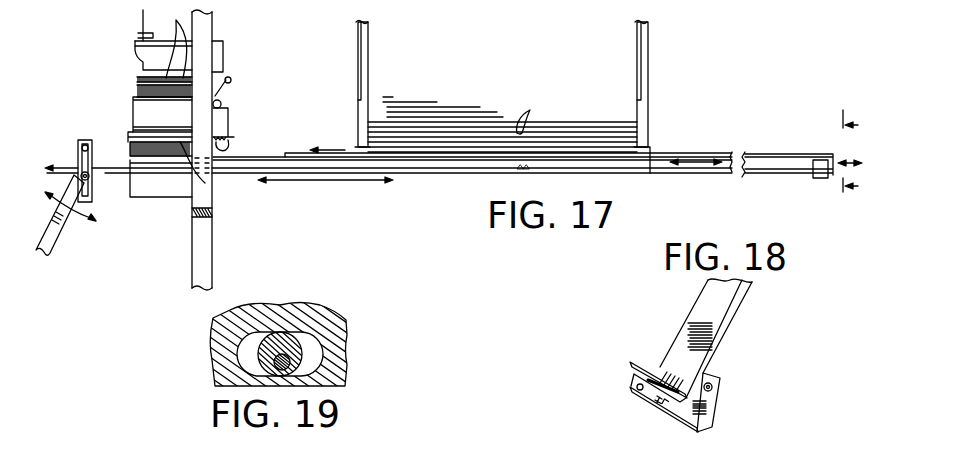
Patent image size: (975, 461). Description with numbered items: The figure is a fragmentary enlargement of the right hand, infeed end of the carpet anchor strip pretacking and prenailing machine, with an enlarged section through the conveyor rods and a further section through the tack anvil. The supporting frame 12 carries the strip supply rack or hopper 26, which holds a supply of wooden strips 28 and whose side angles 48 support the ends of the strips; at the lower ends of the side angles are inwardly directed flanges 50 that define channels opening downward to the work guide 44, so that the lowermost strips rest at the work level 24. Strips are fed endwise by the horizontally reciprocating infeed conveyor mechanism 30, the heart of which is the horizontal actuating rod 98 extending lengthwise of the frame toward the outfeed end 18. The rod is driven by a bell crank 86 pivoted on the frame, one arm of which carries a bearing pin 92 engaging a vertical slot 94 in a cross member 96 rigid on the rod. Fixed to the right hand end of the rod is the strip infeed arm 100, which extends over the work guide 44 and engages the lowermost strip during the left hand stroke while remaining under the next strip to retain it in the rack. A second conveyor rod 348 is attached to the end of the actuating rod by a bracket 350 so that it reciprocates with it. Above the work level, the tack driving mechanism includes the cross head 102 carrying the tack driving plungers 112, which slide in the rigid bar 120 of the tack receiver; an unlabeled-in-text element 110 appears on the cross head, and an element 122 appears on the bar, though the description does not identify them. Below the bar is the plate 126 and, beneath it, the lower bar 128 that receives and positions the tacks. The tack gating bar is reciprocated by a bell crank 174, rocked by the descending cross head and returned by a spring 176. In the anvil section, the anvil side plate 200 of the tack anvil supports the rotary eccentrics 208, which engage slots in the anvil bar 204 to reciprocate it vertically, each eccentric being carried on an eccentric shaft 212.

In FIG. 17, the supporting frame 12 is at (218, 258).
In FIG. 17, the outfeed end 18 is at (853, 159).
In FIG. 17, the work level 24 is at (846, 155).
In FIG. 17, the hopper 26 is at (662, 41).
In FIG. 17, the wooden strips 28 is at (288, 153).
In FIG. 18, the wooden strips 28 is at (656, 370).
In FIG. 17, the infeed conveyor mechanism 30 is at (777, 122).
In FIG. 18, the infeed conveyor mechanism 30 is at (618, 373).
In FIG. 18, the work guide 44 is at (672, 413).
In FIG. 17, the side angles 48 is at (366, 55).
In FIG. 18, the side angles 48 is at (742, 314).
In FIG. 17, the inwardly directed flanges 50 is at (366, 110).
In FIG. 17, the bell crank 86 is at (52, 232).
In FIG. 17, the bearing pin 92 is at (90, 188).
In FIG. 17, the vertical slot 94 is at (82, 150).
In FIG. 17, the cross member 96 is at (88, 140).
In FIG. 17, the actuating rod 98 is at (780, 173).
In FIG. 18, the actuating rod 98 is at (636, 394).
In FIG. 17, the strip infeed arm 100 is at (676, 153).
In FIG. 18, the strip infeed arm 100 is at (654, 372).
In FIG. 17, the cross head 102 is at (224, 57).
In FIG. 17, the cap member 110 is at (150, 68).
In FIG. 17, the tack driving plungers 112 is at (175, 39).
In FIG. 17, the rigid bar 120 is at (135, 118).
In FIG. 17, the brush 122 is at (138, 90).
In FIG. 17, the plate 126 is at (128, 134).
In FIG. 17, the lower bar 128 is at (205, 183).
In FIG. 17, the bell crank 174 is at (232, 92).
In FIG. 17, the spring 176 is at (228, 148).
In FIG. 17, the anvil side plate 200 is at (161, 179).
In FIG. 19, the anvil bar 204 is at (330, 320).
In FIG. 19, the rotary eccentrics 208 is at (302, 349).
In FIG. 19, the eccentric shaft 212 is at (291, 363).
In FIG. 18, the second anchor strip conveyor rod 348 is at (714, 385).
In FIG. 18, the bracket 350 is at (700, 416).